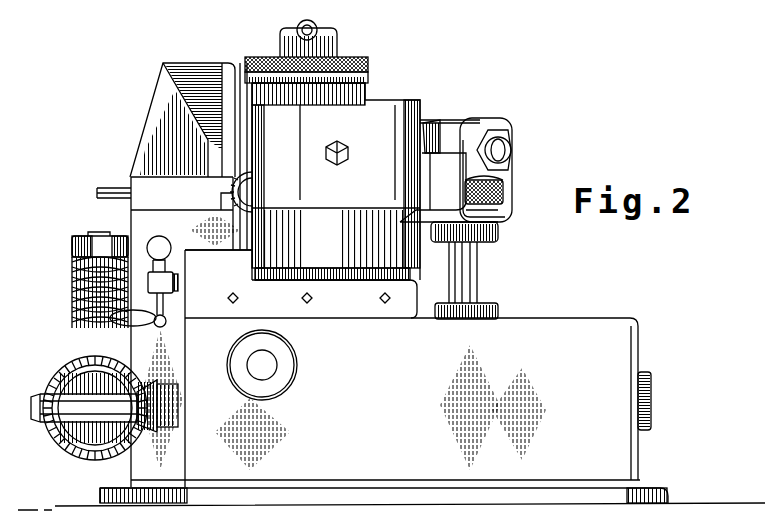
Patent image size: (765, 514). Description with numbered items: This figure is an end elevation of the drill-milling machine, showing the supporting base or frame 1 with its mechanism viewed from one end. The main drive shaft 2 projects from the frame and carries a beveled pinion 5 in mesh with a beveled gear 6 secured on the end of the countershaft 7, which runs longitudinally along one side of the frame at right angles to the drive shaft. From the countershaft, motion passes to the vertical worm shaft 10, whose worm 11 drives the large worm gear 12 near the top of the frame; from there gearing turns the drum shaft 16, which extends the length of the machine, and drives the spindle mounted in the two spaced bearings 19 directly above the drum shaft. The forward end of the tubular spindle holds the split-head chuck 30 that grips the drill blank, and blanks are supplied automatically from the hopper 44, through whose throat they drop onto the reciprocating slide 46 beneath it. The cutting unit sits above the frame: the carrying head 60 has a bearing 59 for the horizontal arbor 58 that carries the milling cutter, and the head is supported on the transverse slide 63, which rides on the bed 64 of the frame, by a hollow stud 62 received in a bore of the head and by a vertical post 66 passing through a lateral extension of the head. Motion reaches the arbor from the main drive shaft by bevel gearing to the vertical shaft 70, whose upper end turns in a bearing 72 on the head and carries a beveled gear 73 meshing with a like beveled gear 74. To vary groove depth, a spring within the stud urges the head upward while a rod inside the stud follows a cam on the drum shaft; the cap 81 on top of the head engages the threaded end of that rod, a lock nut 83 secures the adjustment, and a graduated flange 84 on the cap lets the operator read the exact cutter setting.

The supporting base or frame 1 is at (143, 225).
The main drive shaft 2 is at (36, 422).
The beveled pinion 5 is at (150, 432).
The beveled gear 6 is at (75, 455).
The countershaft 7 is at (95, 393).
The vertical worm shaft 10 is at (90, 236).
The worm 11 is at (73, 300).
The large worm gear 12 is at (128, 310).
The drum shaft 16 is at (272, 363).
The bearings 19 is at (245, 158).
The chuck 30 is at (252, 194).
The hopper 44 is at (201, 62).
The slide 46 is at (97, 192).
The arbor 58 is at (505, 150).
The bearing 59 is at (497, 118).
The carrying head 60 is at (336, 181).
The stud 62 is at (356, 250).
The slide 63 is at (414, 298).
The bed 64 is at (412, 320).
The vertical post 66 is at (416, 100).
The vertical shaft 70 is at (480, 278).
The bearing 72 is at (497, 238).
The beveled gear 73 is at (506, 190).
The beveled gear 74 is at (437, 120).
The cap 81 is at (372, 62).
The lock nut 83 is at (336, 36).
The graduated flange 84 is at (375, 79).